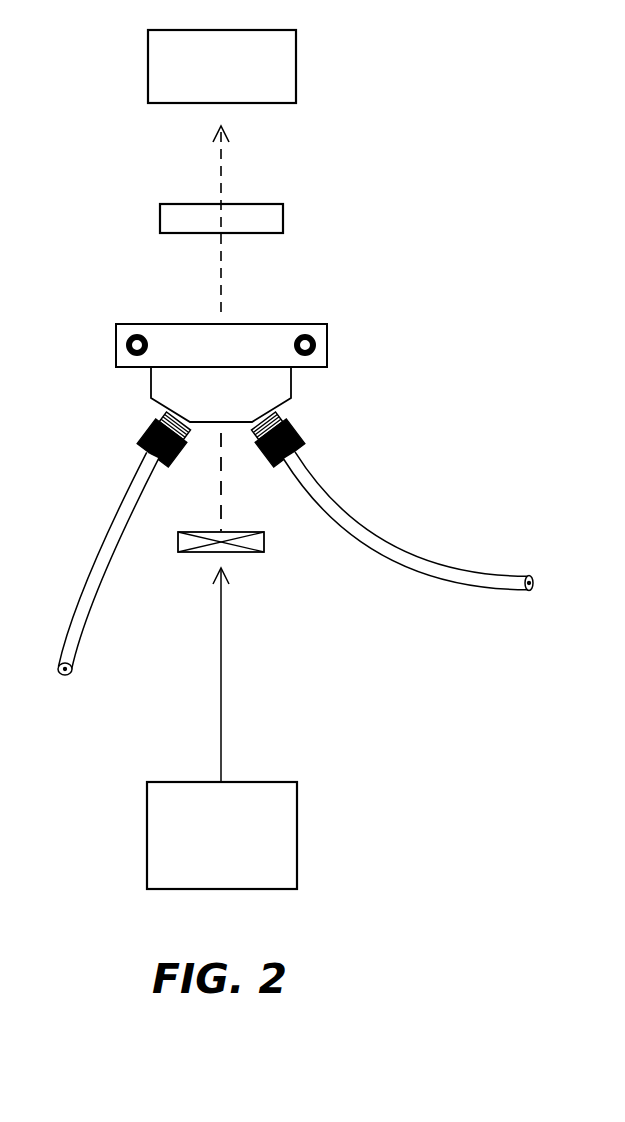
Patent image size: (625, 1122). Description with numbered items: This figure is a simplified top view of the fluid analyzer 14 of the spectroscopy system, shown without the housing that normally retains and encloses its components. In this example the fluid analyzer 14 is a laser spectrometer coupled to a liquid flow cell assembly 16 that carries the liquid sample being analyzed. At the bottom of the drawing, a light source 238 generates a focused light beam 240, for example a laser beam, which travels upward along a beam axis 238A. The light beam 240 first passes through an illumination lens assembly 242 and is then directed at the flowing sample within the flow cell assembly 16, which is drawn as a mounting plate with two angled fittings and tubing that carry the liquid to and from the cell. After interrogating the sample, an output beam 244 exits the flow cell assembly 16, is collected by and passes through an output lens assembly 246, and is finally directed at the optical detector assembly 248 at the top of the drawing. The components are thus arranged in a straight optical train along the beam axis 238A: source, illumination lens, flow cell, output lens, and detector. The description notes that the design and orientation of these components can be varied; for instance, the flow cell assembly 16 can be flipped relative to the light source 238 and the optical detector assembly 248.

The fluid analyzer 14 is at (342, 349).
The liquid flow cell assembly 16 is at (327, 323).
The light source 238 is at (239, 849).
The beam axis 238A is at (220, 490).
The light beam 240 is at (221, 720).
The illumination lens assembly 242 is at (263, 552).
The output beam 244 is at (221, 287).
The output lens assembly 246 is at (283, 217).
The optical detector assembly 248 is at (239, 78).